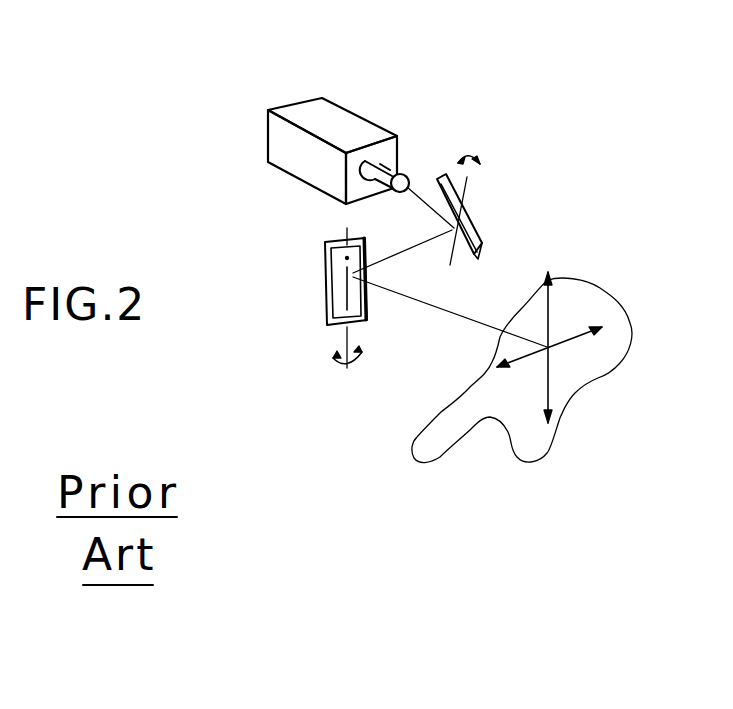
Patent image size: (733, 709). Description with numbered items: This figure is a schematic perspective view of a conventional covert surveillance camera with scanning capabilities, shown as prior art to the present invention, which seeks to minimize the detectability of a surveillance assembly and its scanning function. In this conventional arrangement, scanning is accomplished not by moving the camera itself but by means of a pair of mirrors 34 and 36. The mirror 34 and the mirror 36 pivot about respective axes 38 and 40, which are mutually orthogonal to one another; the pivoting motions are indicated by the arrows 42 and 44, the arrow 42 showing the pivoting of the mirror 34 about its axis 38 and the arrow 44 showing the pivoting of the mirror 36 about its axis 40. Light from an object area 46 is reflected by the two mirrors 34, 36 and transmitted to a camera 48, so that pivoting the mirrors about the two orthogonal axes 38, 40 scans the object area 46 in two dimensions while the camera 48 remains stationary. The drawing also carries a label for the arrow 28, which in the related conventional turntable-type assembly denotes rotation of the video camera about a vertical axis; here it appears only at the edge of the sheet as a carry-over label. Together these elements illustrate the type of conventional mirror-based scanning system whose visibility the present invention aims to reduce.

The arrow 28 is at (0, 0).
The mirror 34 is at (315, 281).
The mirror 36 is at (487, 216).
The axis 38 is at (347, 338).
The axis 40 is at (444, 253).
The arrow 42 is at (347, 367).
The arrow 44 is at (467, 155).
The object area 46 is at (520, 443).
The camera 48 is at (335, 115).